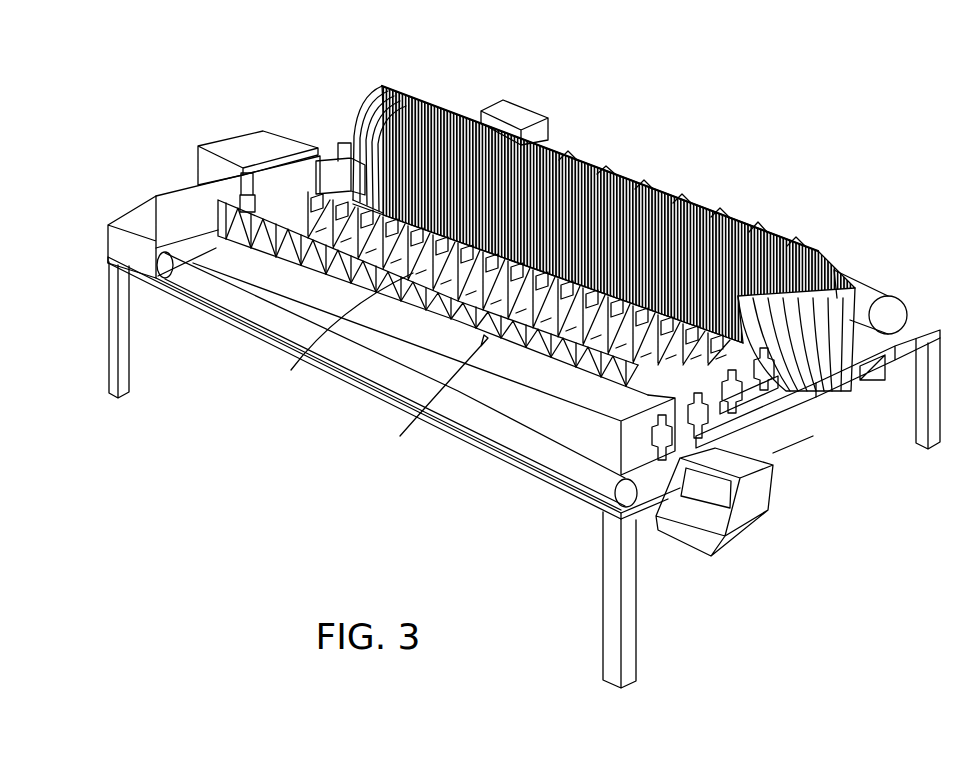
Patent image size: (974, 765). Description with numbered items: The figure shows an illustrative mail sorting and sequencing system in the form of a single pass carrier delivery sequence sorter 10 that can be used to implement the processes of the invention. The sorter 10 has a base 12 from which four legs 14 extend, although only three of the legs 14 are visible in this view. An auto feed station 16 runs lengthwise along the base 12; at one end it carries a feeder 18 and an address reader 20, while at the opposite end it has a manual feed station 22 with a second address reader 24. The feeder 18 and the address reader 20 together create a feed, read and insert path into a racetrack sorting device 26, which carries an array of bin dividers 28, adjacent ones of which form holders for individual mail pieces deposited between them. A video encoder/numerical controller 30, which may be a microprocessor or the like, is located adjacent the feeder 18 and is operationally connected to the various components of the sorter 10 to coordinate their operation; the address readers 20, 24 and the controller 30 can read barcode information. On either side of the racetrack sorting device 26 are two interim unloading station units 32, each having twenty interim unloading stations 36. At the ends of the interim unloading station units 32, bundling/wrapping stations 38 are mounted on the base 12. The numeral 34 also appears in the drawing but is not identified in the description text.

The single pass carrier delivery sequence sorter 10 is at (729, 163).
The base 12 is at (557, 489).
The legs 14 is at (110, 346).
The auto feed station 16 is at (361, 391).
The feeder 18 is at (778, 433).
The address reader 20 is at (797, 395).
The manual feed station 22 is at (130, 222).
The second address reader 24 is at (322, 135).
The racetrack sorting device 26 is at (548, 130).
The bin dividers 28 is at (760, 220).
The video encoder/numerical controller 30 is at (764, 467).
The interim unloading station units 32 is at (396, 424).
The hopper top ridges 34 is at (656, 186).
The interim unloading stations 36 is at (290, 352).
The bundling/wrapping stations 38 is at (256, 128).